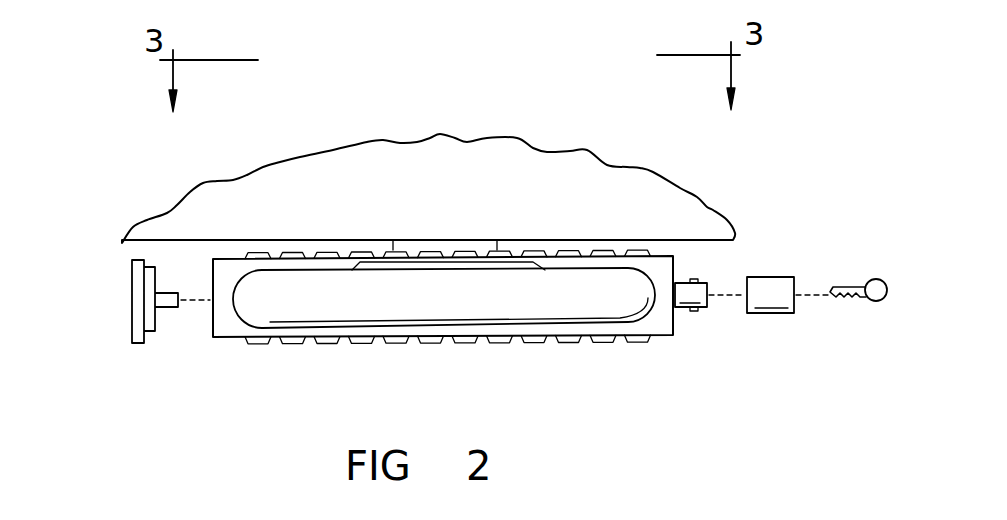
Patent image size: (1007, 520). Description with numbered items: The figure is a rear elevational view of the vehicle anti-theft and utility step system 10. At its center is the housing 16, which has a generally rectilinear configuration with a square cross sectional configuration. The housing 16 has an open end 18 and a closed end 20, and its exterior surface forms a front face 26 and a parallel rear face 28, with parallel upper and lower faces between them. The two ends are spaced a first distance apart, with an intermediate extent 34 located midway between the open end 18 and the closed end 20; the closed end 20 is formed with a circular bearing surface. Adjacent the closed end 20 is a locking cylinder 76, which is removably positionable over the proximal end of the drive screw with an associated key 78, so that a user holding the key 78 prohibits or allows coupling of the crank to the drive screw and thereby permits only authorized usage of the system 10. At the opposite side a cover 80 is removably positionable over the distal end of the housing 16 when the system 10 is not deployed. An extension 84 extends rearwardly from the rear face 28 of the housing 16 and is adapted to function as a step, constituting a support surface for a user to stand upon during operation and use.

The vehicle anti-theft and utility step system 10 is at (753, 214).
The housing 16 is at (660, 327).
The open end 18 is at (212, 318).
The closed end 20 is at (677, 322).
The front face 26 is at (232, 258).
The rear face 28 is at (232, 339).
The intermediate extent 34 is at (441, 267).
The locking cylinder 76 is at (772, 304).
The key 78 is at (877, 279).
The cover 80 is at (131, 300).
The extension 84 is at (528, 303).